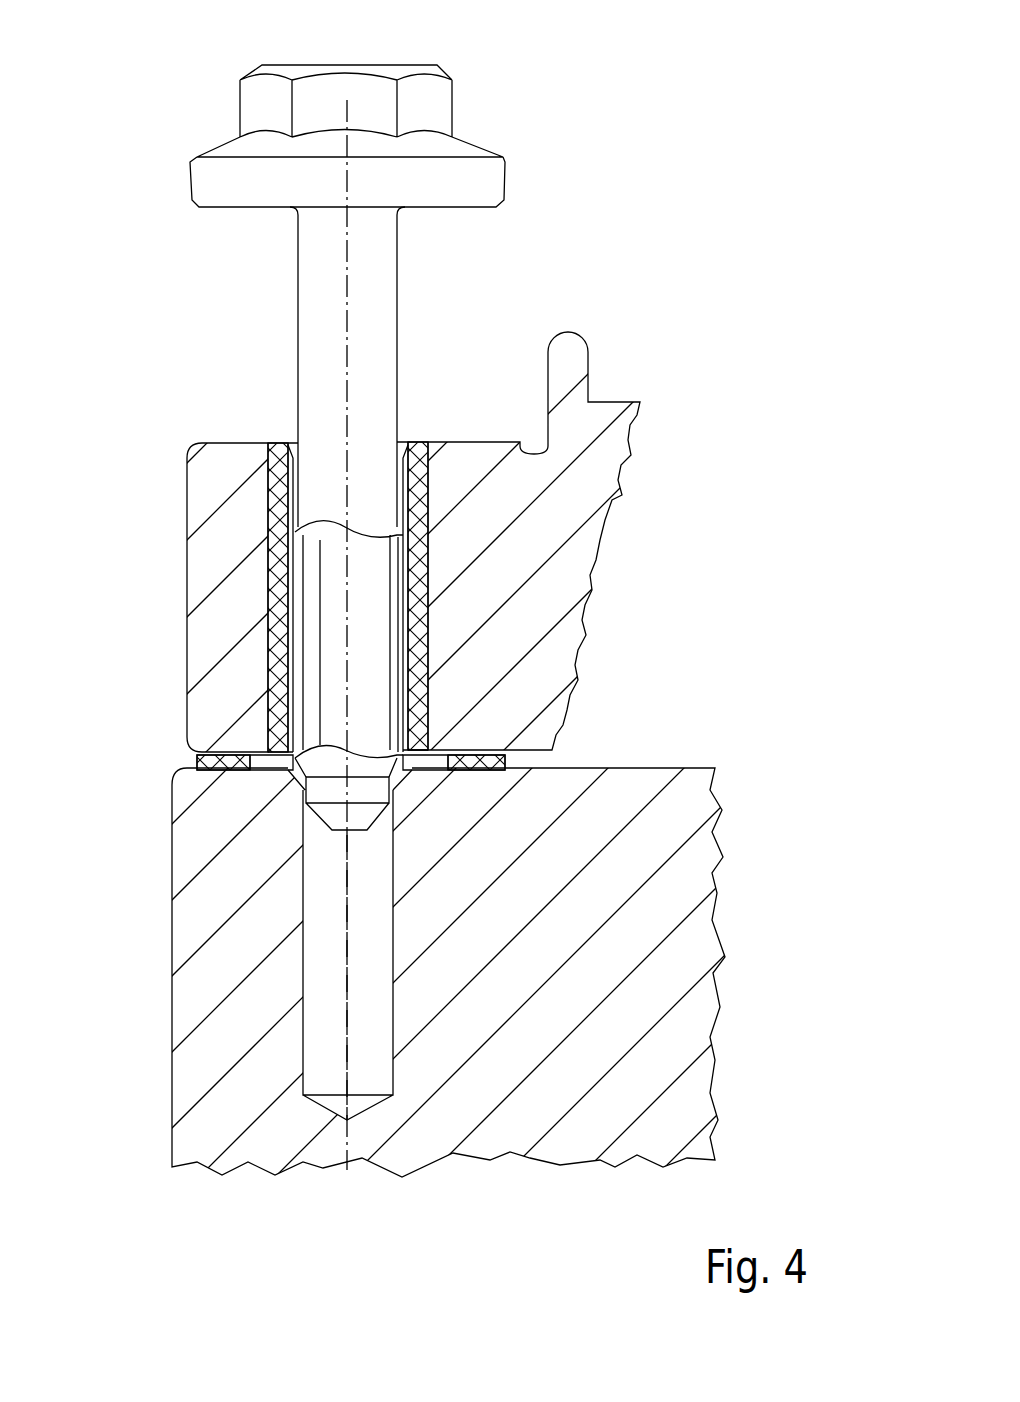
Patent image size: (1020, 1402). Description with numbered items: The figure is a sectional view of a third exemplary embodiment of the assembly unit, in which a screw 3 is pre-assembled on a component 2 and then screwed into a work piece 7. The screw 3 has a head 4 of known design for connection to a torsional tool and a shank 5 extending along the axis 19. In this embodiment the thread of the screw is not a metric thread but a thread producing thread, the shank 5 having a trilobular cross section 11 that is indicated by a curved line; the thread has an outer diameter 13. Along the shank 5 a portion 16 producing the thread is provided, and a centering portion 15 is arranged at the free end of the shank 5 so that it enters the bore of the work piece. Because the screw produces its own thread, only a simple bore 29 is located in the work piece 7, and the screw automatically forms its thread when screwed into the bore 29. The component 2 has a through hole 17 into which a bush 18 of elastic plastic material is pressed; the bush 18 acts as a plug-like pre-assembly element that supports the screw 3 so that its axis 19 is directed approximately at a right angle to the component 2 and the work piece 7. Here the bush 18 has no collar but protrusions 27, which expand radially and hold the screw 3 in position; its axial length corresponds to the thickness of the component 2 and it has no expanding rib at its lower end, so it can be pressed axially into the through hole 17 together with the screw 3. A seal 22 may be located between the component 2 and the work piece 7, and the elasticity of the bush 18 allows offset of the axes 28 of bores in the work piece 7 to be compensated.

The component 2 is at (518, 567).
The screw 3 is at (515, 180).
The head 4 is at (462, 104).
The shank 5 is at (315, 320).
The work piece 7 is at (657, 1070).
The trilobular cross section 11 is at (568, 599).
The outer diameter 13 is at (295, 658).
The centering portion 15 is at (322, 792).
The portion producing the thread 16 is at (568, 713).
The through hole 17 is at (268, 583).
The bush 18 is at (620, 486).
The axis 19 is at (342, 276).
The seal 22 is at (197, 762).
The protrusions 27 is at (245, 566).
The axes 28 is at (347, 1005).
The bore 29 is at (395, 946).